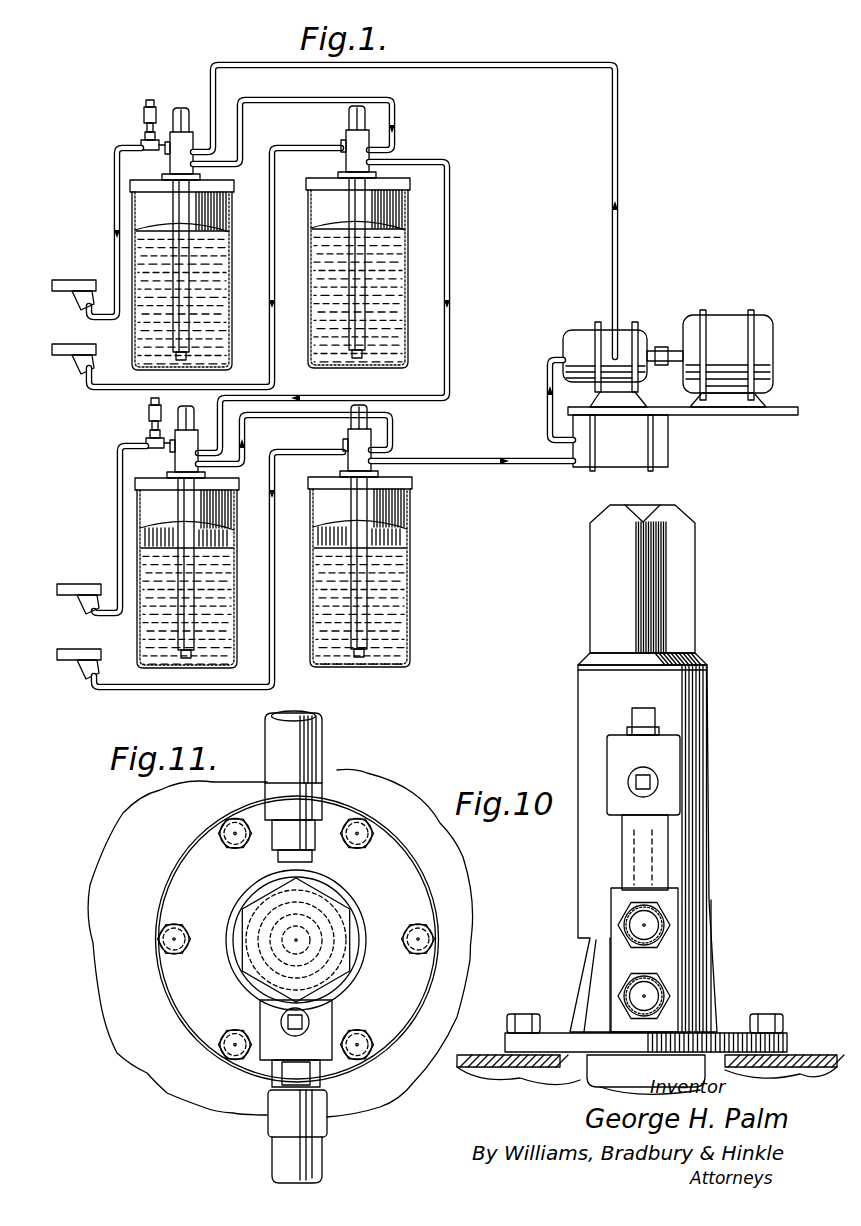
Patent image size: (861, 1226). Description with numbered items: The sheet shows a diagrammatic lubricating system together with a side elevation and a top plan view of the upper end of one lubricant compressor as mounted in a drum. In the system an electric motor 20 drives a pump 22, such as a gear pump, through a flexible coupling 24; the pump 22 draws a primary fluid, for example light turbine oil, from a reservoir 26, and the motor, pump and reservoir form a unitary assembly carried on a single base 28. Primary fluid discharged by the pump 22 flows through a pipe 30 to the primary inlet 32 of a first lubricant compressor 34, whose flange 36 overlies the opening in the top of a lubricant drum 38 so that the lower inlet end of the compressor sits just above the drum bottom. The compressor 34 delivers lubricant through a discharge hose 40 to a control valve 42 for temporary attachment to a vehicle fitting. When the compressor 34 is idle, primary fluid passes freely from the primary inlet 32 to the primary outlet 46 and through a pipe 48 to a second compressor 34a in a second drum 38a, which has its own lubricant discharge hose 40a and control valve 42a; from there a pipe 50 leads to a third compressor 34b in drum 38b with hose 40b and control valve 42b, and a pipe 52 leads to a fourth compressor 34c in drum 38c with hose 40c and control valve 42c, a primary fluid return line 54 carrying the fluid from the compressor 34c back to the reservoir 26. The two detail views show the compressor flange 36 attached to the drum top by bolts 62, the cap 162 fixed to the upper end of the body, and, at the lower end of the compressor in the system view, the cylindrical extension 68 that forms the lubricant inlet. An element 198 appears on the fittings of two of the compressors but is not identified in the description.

In FIG. 1, the electric motor 20 is at (720, 330).
In FIG. 1, the pump 22 is at (606, 338).
In FIG. 1, the flexible coupling 24 is at (660, 347).
In FIG. 1, the reservoir 26 is at (668, 453).
In FIG. 1, the base 28 is at (755, 415).
In FIG. 1, the pipe 30 is at (620, 146).
In FIG. 1, the primary inlet 32 is at (191, 145).
In FIG. 10, the primary inlet 32 is at (665, 925).
In FIG. 1, the lubricant compressor 34 is at (178, 132).
In FIG. 1, the lubricant compressor 34a is at (348, 136).
In FIG. 1, the lubricant compressor 34b is at (170, 420).
In FIG. 1, the lubricant compressor 34c is at (352, 440).
In FIG. 1, the flange 36 is at (165, 174).
In FIG. 10, the flange 36 is at (505, 1045).
In FIG. 11, the flange 36 is at (158, 969).
In FIG. 1, the lubricant drum 38 is at (230, 232).
In FIG. 1, the lubricant drum 38a is at (408, 285).
In FIG. 1, the lubricant drum 38b is at (232, 540).
In FIG. 1, the lubricant drum 38c is at (412, 544).
In FIG. 1, the discharge hose 40 is at (114, 192).
In FIG. 1, the lubricant discharge hose 40a is at (268, 262).
In FIG. 1, the lubricant discharge hose 40b is at (116, 506).
In FIG. 1, the discharge hose 40c is at (268, 600).
In FIG. 1, the control valve 42 is at (90, 280).
In FIG. 1, the control valve 42a is at (78, 344).
In FIG. 1, the control valve 42b is at (80, 584).
In FIG. 1, the control valve 42c is at (80, 649).
In FIG. 1, the primary outlet 46 is at (226, 166).
In FIG. 10, the primary outlet 46 is at (665, 996).
In FIG. 1, the pipe 48 is at (274, 108).
In FIG. 1, the pipe 50 is at (450, 264).
In FIG. 1, the pipe 52 is at (294, 439).
In FIG. 1, the primary fluid return line 54 is at (470, 458).
In FIG. 10, the bolts 62 is at (524, 1014).
In FIG. 11, the bolts 62 is at (215, 836).
In FIG. 1, the cylindrical extension 68 is at (190, 365).
In FIG. 1, the cap 162 is at (370, 120).
In FIG. 10, the cap 162 is at (692, 595).
In FIG. 11, the cap 162 is at (392, 968).
In FIG. 1, the relief valve 198 is at (145, 123).